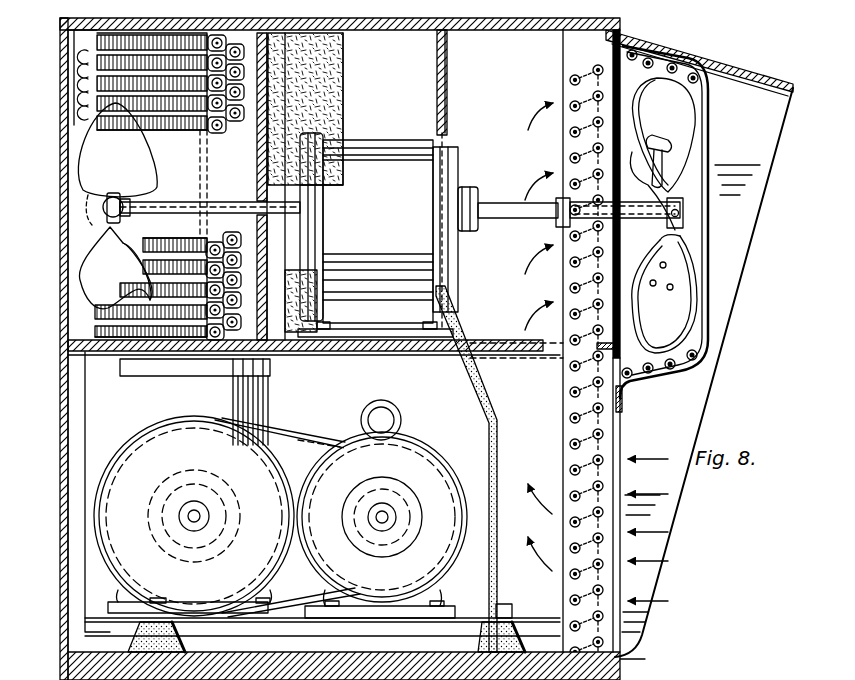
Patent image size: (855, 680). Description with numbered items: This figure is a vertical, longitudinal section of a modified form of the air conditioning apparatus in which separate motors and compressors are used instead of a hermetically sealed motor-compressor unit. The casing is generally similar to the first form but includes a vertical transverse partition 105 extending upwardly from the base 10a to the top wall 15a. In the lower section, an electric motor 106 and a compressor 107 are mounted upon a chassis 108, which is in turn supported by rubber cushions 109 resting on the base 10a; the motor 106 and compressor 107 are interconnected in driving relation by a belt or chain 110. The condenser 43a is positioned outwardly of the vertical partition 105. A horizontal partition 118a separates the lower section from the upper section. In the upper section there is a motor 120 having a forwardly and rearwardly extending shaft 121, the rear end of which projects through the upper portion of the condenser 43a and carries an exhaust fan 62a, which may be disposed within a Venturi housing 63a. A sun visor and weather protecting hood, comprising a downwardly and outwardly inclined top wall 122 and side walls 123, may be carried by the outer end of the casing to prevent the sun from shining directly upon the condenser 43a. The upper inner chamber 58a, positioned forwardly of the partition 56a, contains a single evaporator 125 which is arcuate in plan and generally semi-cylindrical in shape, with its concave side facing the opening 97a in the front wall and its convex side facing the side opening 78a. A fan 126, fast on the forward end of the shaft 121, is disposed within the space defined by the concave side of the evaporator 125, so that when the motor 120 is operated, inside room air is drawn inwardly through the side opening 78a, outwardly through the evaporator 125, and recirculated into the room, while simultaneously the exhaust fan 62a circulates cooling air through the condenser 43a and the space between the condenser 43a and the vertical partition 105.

The base 10a is at (621, 666).
The top wall 15a is at (496, 36).
The condenser 43a is at (558, 356).
The partition 56a is at (286, 100).
The upper inner chamber 58a is at (203, 187).
The exhaust fan 62a is at (678, 134).
The Venturi housing 63a is at (683, 375).
The side opening 78a is at (258, 153).
The front wall opening 97a is at (62, 152).
The vertical transverse partition 105 is at (466, 469).
The electric motor 106 is at (413, 440).
The compressor 107 is at (226, 440).
The chassis 108 is at (303, 618).
The rubber cushions 109 is at (183, 645).
The belt or chain 110 is at (298, 434).
The shelf 118a is at (383, 352).
The motor 120 is at (392, 158).
The shaft 121 is at (191, 209).
The top wall of hood 122 is at (742, 74).
The side walls of hood 123 is at (752, 226).
The evaporator 125 is at (286, 68).
The fan 126 is at (102, 268).